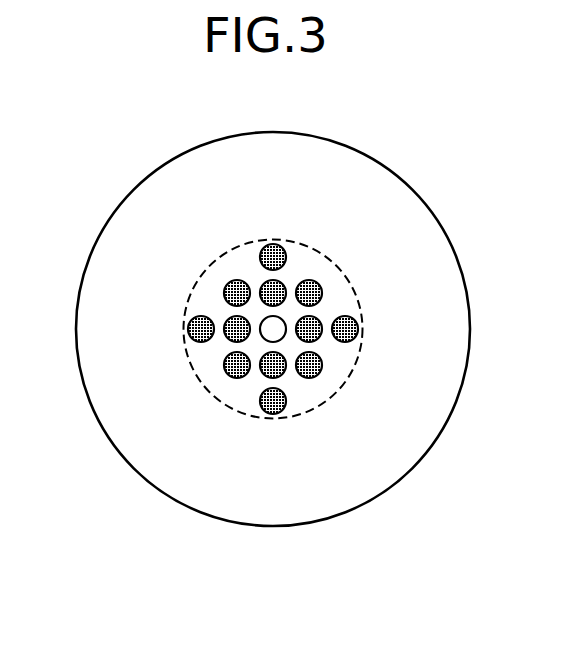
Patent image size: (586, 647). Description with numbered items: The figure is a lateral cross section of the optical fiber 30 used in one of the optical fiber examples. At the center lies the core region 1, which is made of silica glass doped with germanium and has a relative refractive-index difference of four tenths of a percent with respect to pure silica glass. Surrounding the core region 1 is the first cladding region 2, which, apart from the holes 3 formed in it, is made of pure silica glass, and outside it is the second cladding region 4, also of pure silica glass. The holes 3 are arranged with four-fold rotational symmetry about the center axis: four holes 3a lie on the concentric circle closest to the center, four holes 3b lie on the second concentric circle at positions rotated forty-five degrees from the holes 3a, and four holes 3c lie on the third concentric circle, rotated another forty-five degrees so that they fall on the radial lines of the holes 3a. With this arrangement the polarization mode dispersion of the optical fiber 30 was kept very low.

The optical fiber 30 is at (284, 353).
The core region 1 is at (278, 323).
The first cladding region 2 is at (343, 292).
The holes 3 is at (196, 353).
The holes 3a is at (237, 329).
The holes 3b is at (237, 365).
The holes 3c is at (273, 401).
The second cladding region 4 is at (433, 436).